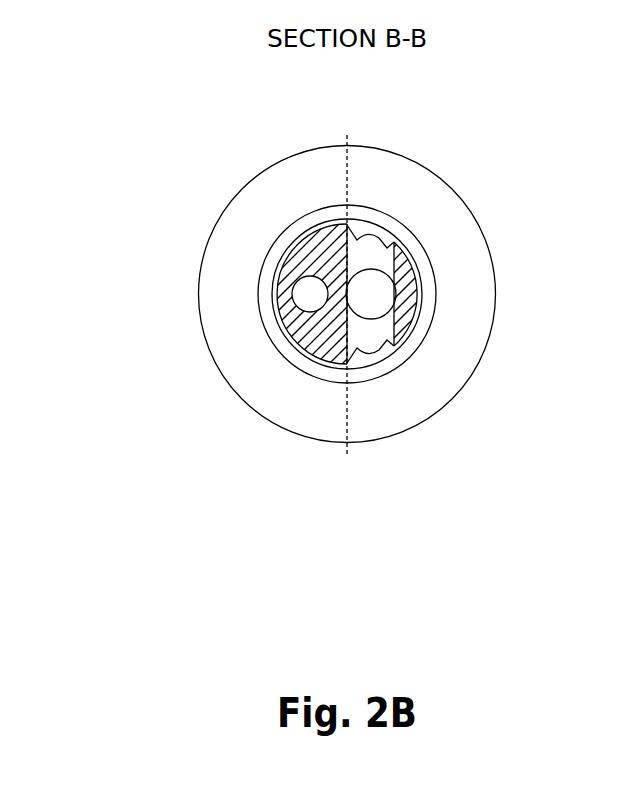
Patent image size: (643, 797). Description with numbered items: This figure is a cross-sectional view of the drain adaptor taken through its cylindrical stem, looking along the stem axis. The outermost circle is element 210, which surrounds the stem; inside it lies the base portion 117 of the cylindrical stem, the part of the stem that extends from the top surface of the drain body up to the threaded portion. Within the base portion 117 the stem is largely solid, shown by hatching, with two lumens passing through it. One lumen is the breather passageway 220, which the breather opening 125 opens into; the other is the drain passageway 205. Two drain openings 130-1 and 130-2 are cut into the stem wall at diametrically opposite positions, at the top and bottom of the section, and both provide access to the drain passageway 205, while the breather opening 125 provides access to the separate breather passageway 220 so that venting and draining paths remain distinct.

The outer housing 210 is at (255, 401).
The base portion 117 is at (270, 349).
The breather opening 125 is at (290, 269).
The breather passageway 220 is at (301, 299).
The drain passageway 205 is at (379, 305).
The drain opening 130-1 is at (385, 219).
The drain opening 130-2 is at (384, 369).